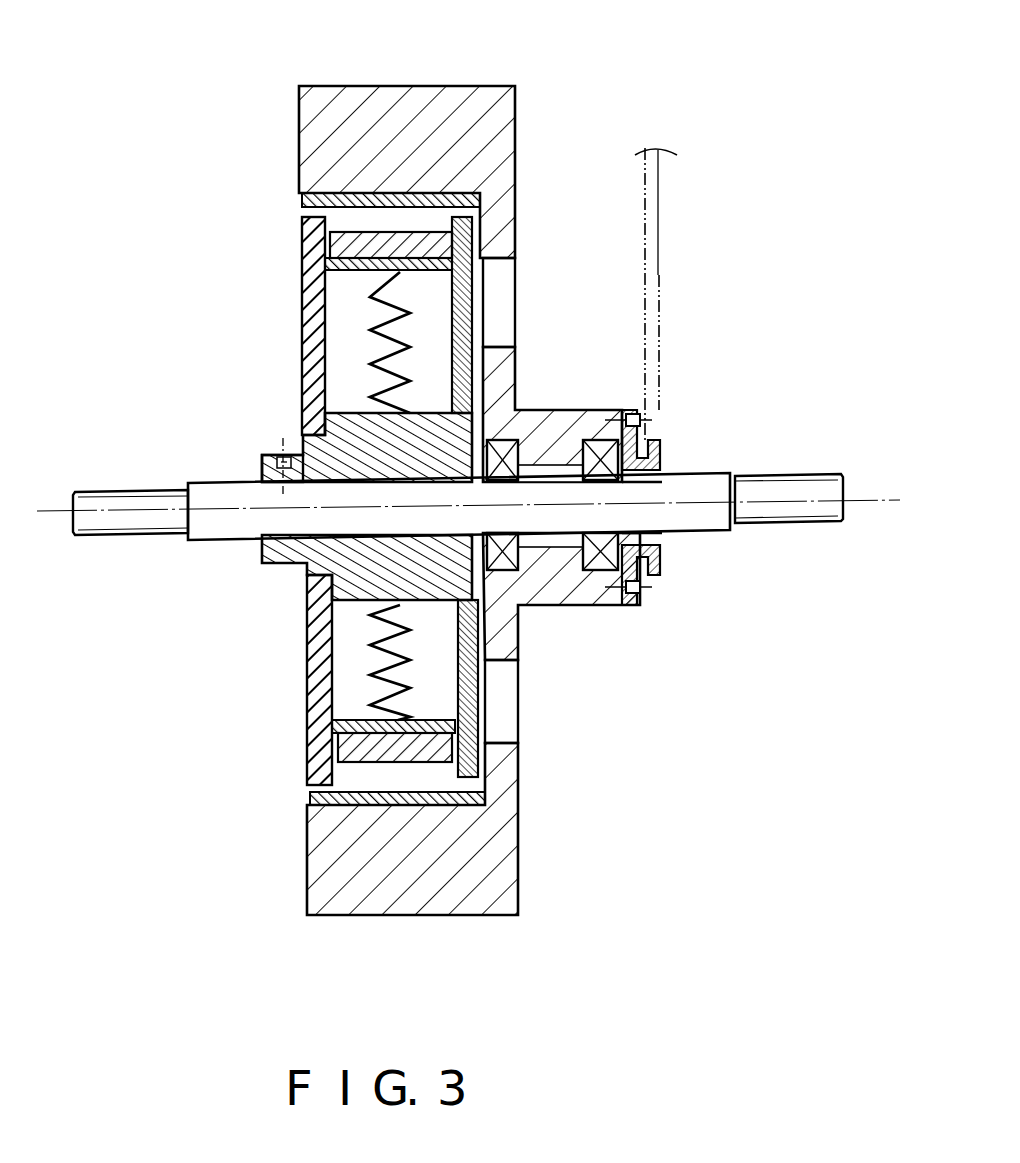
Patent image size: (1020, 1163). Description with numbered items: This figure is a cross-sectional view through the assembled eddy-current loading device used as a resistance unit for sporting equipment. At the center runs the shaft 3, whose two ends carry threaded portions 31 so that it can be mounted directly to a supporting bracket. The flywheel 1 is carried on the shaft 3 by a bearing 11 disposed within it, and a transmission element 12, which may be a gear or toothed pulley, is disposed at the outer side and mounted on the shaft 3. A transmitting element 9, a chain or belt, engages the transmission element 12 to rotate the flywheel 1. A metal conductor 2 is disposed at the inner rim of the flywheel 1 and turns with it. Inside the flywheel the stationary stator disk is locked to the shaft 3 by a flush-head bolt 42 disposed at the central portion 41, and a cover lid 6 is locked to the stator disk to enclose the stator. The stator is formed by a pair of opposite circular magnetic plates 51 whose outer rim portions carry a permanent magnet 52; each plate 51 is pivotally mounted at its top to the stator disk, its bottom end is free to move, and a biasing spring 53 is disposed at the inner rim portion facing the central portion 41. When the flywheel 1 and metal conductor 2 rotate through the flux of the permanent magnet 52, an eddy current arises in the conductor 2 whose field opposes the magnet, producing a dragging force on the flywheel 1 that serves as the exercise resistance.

The flywheel 1 is at (445, 118).
The metal conductor 2 is at (392, 200).
The shaft 3 is at (548, 515).
The cover lid 6 is at (303, 378).
The transmitting element 9 is at (650, 248).
The bearing 11 is at (598, 440).
The transmission element 12 is at (660, 440).
The threaded portion 31 is at (116, 540).
The central portion 41 is at (352, 565).
The flush-head bolt 42 is at (280, 455).
The circular magnetic plate 51 is at (350, 280).
The permanent magnet 52 is at (305, 213).
The biasing spring 53 is at (385, 345).